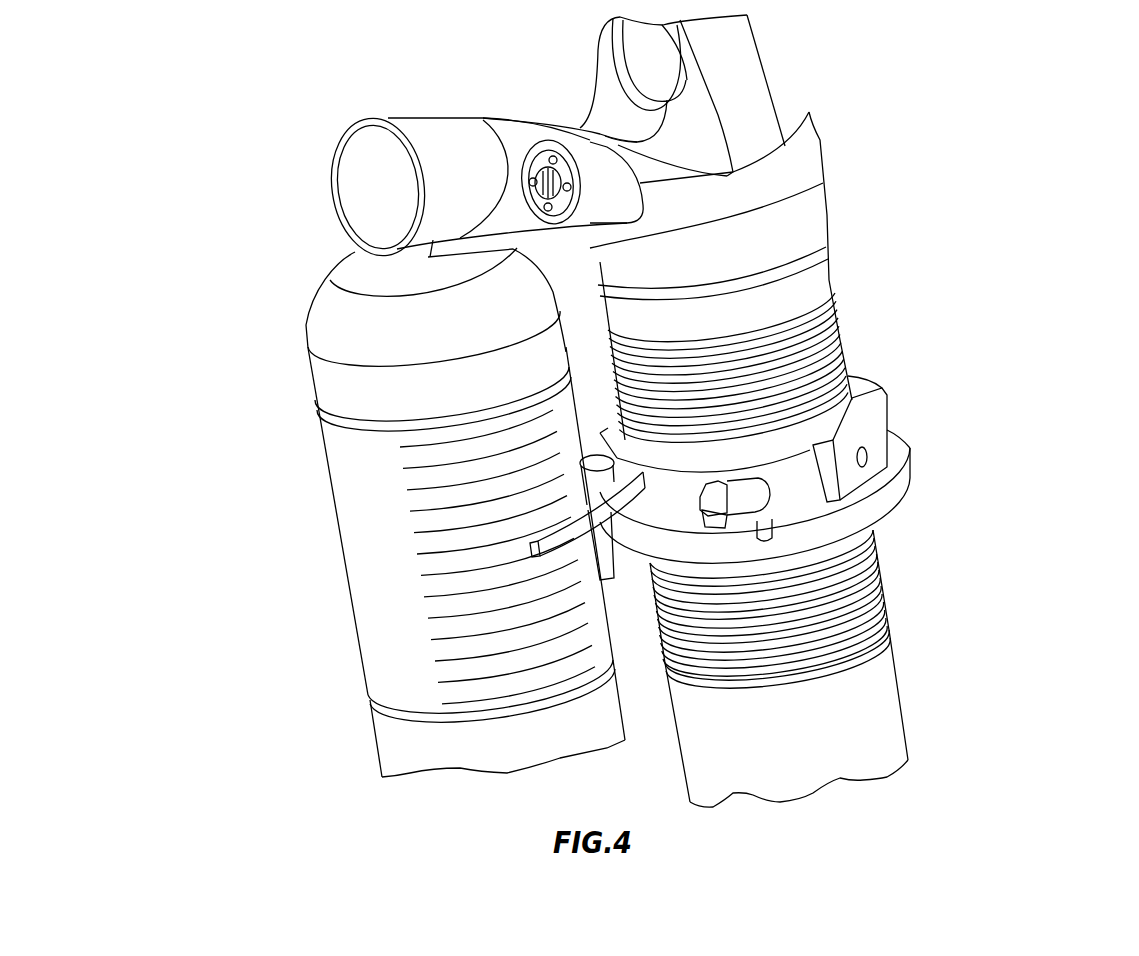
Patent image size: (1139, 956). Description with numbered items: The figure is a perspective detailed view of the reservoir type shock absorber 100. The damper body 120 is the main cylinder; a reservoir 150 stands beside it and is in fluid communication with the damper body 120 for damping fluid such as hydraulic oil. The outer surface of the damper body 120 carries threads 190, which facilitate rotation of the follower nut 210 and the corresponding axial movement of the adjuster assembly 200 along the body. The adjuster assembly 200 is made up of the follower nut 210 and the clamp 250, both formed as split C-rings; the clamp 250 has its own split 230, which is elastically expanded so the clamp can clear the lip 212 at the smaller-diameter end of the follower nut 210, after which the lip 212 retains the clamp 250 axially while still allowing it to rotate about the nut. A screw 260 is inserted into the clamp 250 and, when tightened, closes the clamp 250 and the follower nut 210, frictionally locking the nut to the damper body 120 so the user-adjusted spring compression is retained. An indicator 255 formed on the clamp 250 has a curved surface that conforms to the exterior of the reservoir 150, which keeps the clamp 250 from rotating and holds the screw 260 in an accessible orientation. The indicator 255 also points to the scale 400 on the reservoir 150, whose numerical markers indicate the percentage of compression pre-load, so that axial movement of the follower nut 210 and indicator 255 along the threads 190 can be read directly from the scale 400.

The shock absorber 100 is at (1000, 152).
The damper body 120 is at (843, 313).
The reservoir 150 is at (337, 487).
The threads 190 is at (853, 590).
The adjuster assembly 200 is at (632, 520).
The follower nut 210 is at (892, 488).
The lip 212 is at (880, 547).
The split 230 is at (882, 400).
The clamp 250 is at (895, 397).
The indicator 255 is at (577, 540).
The screw 260 is at (707, 467).
The scale 400 is at (380, 547).